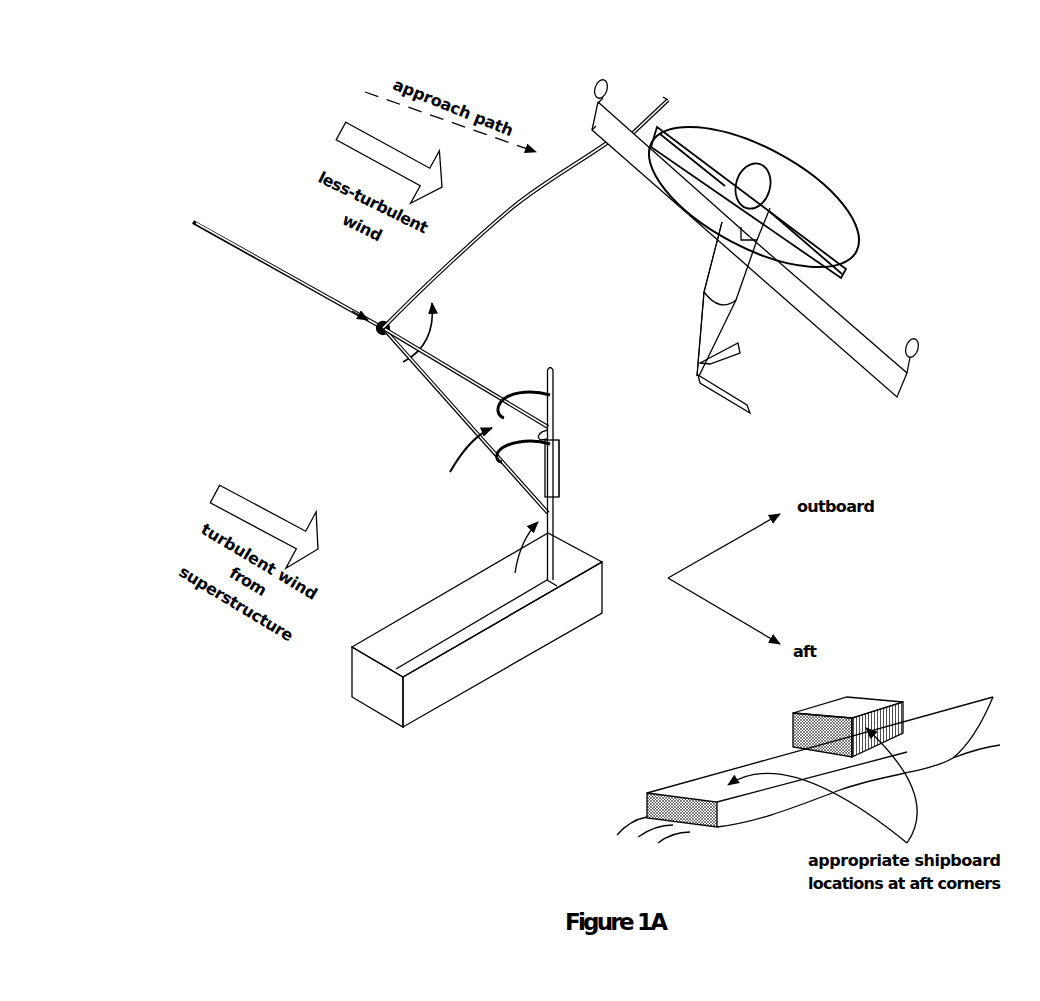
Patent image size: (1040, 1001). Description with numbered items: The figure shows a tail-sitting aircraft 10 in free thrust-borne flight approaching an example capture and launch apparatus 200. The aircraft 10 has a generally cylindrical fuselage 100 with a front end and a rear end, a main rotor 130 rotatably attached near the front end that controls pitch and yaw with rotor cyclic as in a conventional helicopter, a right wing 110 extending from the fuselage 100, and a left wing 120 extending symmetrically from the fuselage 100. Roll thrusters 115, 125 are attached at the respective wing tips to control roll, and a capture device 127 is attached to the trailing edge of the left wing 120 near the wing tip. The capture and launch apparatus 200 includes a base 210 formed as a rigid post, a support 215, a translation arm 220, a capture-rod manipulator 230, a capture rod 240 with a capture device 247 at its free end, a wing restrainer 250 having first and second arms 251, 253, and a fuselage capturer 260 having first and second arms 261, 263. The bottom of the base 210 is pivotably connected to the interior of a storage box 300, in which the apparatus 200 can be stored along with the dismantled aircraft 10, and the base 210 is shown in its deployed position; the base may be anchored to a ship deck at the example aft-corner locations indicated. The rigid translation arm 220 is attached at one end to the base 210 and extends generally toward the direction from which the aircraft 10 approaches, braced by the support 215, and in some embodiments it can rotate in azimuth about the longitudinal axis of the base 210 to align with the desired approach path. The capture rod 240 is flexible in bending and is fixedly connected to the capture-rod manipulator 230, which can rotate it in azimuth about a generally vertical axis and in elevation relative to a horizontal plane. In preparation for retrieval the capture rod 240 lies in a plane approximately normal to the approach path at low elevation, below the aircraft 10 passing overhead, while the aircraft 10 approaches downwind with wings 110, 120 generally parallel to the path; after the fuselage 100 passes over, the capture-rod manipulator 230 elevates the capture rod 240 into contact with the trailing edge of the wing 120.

The tail-sitting aircraft 10 is at (905, 144).
The fuselage 100 is at (718, 276).
The right wing 110 is at (860, 334).
The roll thruster 115 is at (918, 343).
The left wing 120 is at (642, 168).
The roll thruster 125 is at (606, 80).
The capture device 127 is at (592, 132).
The main rotor 130 is at (858, 251).
The capture and launch apparatus 200 is at (327, 439).
The base 210 is at (553, 530).
The support 215 is at (424, 382).
The translation arm 220 is at (287, 279).
The capture-rod manipulator 230 is at (375, 335).
The capture rod 240 is at (513, 210).
The capture device 247 is at (670, 100).
The wing restrainer 250 is at (566, 483).
The first arm 251 is at (560, 443).
The second arm 253 is at (548, 427).
The fuselage capturer 260 is at (453, 462).
The first arm 261 is at (517, 390).
The second arm 263 is at (497, 466).
The storage box 300 is at (357, 731).